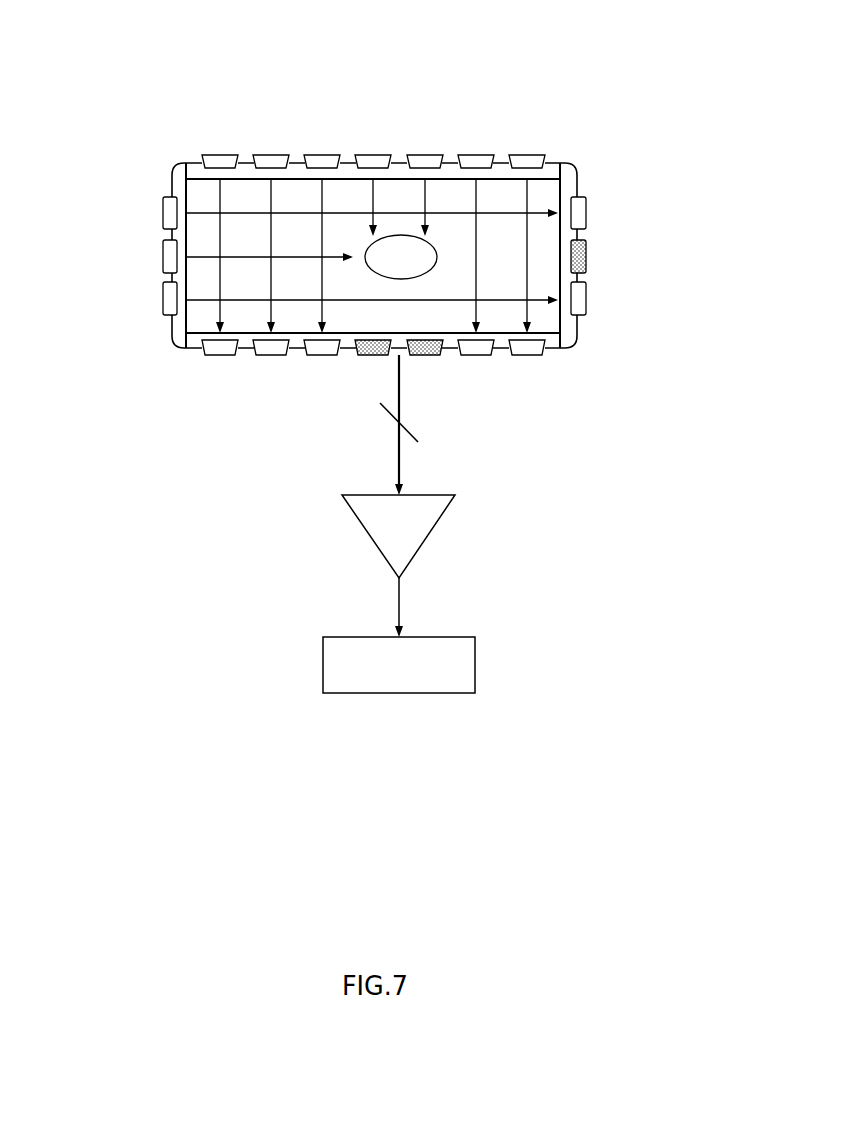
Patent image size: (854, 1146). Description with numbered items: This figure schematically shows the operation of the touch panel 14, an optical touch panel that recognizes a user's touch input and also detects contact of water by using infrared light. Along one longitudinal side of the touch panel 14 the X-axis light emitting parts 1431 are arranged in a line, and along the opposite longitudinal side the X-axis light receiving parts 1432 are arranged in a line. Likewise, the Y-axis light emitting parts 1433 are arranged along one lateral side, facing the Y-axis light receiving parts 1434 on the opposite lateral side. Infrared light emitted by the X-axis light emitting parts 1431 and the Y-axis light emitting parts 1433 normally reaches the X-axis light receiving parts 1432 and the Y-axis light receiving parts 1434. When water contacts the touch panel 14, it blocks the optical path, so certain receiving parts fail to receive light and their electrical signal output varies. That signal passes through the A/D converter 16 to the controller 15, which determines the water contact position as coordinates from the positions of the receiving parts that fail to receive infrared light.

The touch panel 14 is at (510, 88).
The X-axis light emitting parts 1431 is at (528, 137).
The X-axis light receiving parts 1432 is at (528, 375).
The Y-axis light emitting parts 1433 is at (142, 215).
The Y-axis light receiving parts 1434 is at (605, 215).
The A/D converter 16 is at (435, 493).
The controller 15 is at (477, 663).